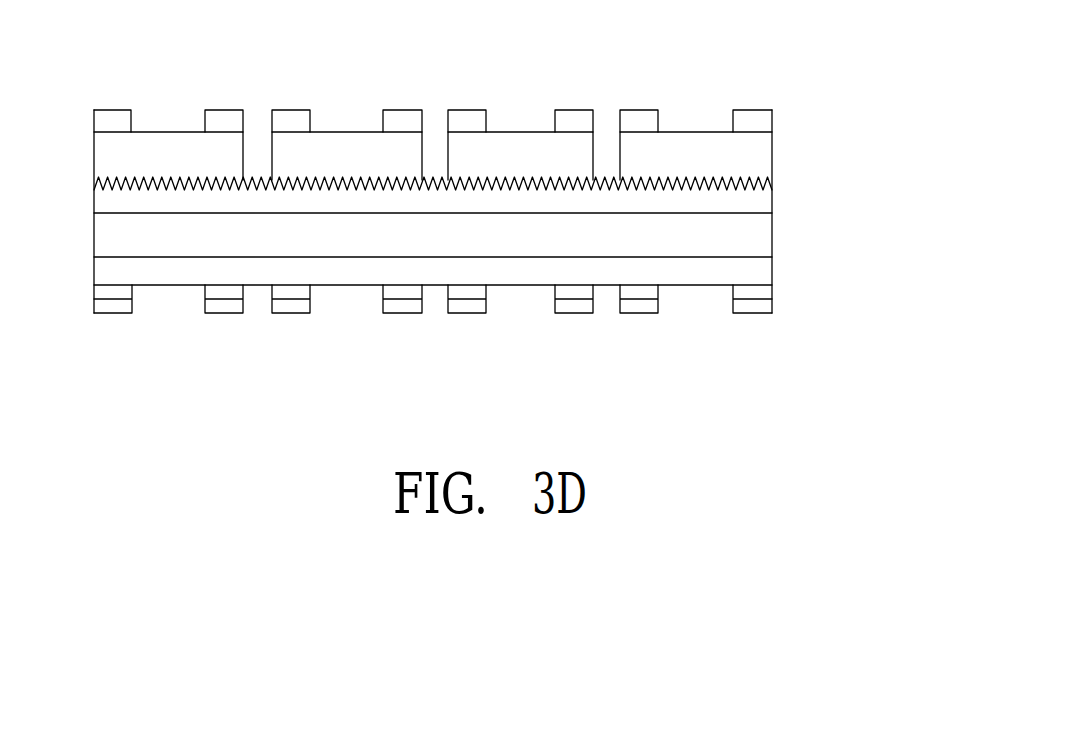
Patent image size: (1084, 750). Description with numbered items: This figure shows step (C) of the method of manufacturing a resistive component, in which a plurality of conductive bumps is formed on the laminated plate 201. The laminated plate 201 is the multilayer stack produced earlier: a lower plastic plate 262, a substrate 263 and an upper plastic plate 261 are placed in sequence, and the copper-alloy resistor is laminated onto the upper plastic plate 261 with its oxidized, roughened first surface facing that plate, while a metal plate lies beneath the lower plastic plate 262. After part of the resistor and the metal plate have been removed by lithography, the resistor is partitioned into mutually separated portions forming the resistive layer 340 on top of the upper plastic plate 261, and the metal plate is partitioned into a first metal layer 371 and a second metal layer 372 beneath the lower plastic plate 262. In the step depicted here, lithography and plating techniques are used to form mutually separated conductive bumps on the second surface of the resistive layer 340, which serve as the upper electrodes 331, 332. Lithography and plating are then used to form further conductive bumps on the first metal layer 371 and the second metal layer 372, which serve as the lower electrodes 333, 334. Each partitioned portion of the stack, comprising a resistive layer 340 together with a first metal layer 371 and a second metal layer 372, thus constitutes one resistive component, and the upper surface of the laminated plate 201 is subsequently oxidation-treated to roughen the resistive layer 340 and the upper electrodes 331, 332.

The laminated plate 201 is at (912, 42).
The resistive layer 340 is at (753, 151).
The upper plastic plate 261 is at (753, 192).
The substrate 263 is at (753, 236).
The lower plastic plate 262 is at (753, 273).
The upper electrode 331 is at (647, 122).
The upper electrode 332 is at (762, 123).
The lower electrode 333 is at (122, 307).
The lower electrode 334 is at (215, 308).
The first metal layer 371 is at (653, 292).
The second metal layer 372 is at (742, 292).